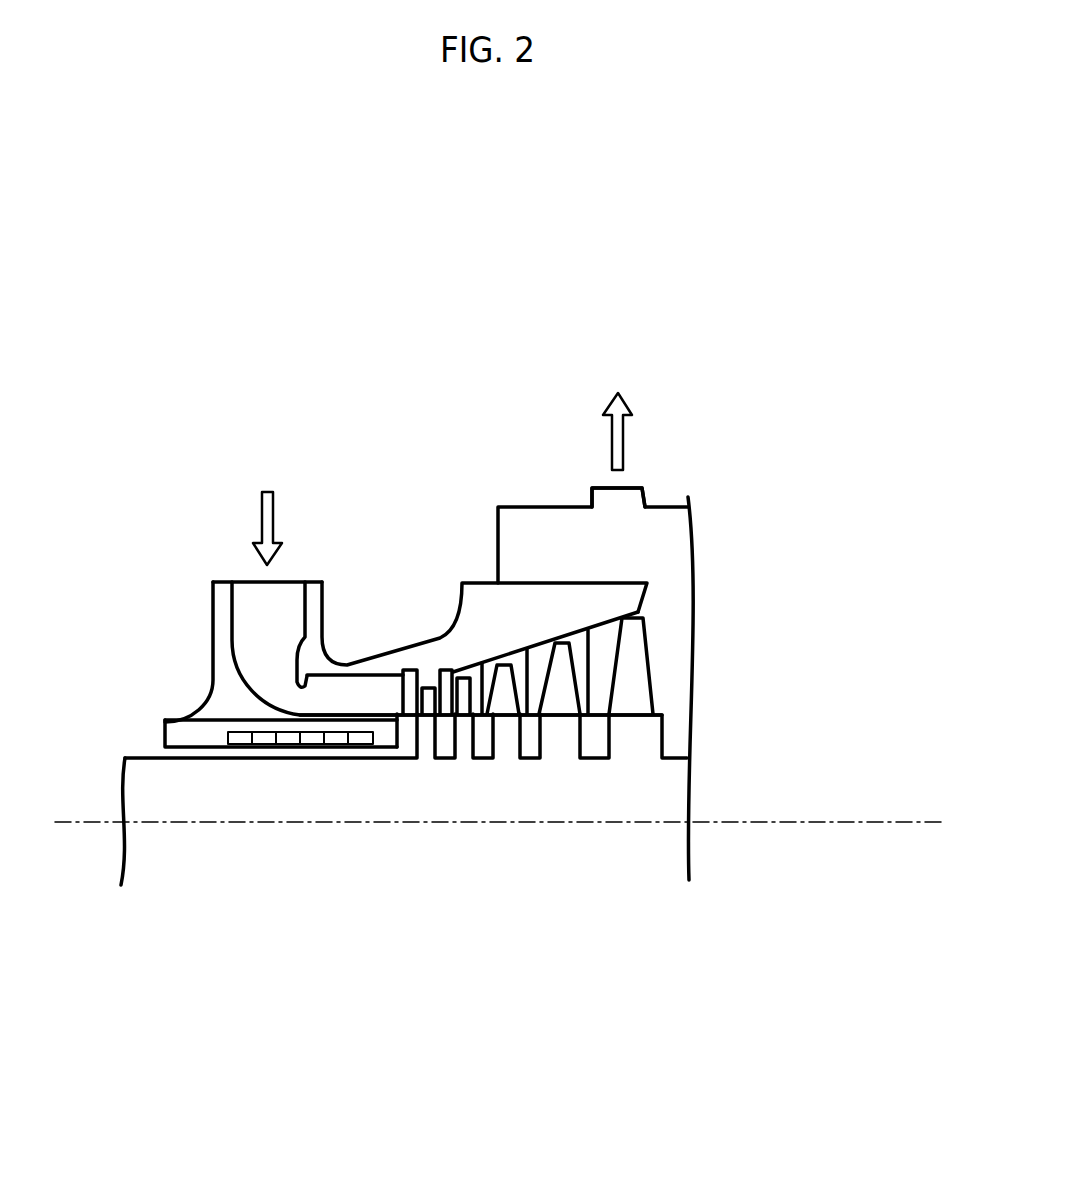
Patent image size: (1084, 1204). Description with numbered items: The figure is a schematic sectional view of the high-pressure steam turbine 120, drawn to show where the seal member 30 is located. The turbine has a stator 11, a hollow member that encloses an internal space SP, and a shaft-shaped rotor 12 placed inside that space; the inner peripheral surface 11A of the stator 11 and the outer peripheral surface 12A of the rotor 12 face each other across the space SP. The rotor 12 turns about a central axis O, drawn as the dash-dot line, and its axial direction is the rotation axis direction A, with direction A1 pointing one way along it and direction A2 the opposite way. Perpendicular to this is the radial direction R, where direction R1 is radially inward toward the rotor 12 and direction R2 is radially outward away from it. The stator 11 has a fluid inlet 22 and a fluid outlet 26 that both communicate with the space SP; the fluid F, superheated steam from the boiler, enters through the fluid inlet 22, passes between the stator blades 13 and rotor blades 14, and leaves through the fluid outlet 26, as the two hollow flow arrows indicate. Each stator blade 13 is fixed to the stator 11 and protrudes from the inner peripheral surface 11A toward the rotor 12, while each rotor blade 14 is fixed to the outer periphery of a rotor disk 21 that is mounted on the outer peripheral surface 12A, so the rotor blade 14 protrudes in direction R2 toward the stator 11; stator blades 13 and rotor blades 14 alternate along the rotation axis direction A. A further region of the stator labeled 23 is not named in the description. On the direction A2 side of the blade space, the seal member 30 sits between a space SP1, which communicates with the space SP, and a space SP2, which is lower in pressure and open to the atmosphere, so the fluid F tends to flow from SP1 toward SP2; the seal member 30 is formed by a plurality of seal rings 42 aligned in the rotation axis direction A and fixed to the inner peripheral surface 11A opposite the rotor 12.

The stator 11 is at (228, 698).
The inner peripheral surface 11A is at (572, 652).
The rotor 12 is at (465, 796).
The outer peripheral surface 12A is at (393, 753).
The stator blade 13 is at (483, 687).
The rotor blade 14 is at (428, 686).
The rotor disk 21 is at (430, 740).
The fluid inlet 22 is at (245, 593).
The flow passage 23 is at (362, 685).
The fluid outlet 26 is at (640, 476).
The seal member 30 is at (292, 765).
The seal ring 42 is at (224, 733).
The high-pressure steam turbine 120 is at (444, 508).
The space SP is at (387, 697).
The space SP1 is at (380, 753).
The space SP2 is at (215, 747).
The fluid F is at (273, 518).
The radial direction R is at (770, 633).
The direction R1 is at (825, 632).
The direction R2 is at (869, 632).
The rotation axis direction A is at (817, 908).
The direction A1 is at (718, 983).
The direction A2 is at (718, 1029).
The central axis O is at (880, 824).